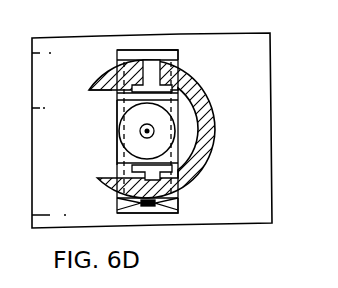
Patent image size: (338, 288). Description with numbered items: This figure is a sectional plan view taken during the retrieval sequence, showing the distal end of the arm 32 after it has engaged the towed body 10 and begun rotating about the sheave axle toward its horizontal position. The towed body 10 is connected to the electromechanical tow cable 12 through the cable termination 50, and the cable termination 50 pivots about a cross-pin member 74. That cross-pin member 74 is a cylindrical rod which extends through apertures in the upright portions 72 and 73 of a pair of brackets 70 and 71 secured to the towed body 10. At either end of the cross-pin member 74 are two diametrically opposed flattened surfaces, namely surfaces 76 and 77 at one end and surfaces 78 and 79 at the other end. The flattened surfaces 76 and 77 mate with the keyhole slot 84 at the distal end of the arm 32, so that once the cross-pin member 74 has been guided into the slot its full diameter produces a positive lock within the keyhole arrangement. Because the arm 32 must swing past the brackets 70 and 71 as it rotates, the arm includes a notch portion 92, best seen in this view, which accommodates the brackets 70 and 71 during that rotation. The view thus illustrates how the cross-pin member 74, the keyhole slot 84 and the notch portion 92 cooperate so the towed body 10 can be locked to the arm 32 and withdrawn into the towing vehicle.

The towed body 10 is at (34, 68).
The electromechanical tow cable 12 is at (154, 131).
The arm 32 is at (199, 83).
The cable termination 50 is at (126, 133).
The bracket 70 is at (160, 213).
The bracket 71 is at (178, 51).
The upright portion 72 is at (113, 170).
The upright portion 73 is at (135, 93).
The cross-pin member 74 is at (118, 126).
The flattened surface 76 is at (121, 208).
The flattened surface 77 is at (180, 208).
The flattened surface 78 is at (160, 60).
The flattened surface 79 is at (164, 60).
The keyhole slot 84 is at (103, 76).
The notch portion 92 is at (100, 156).